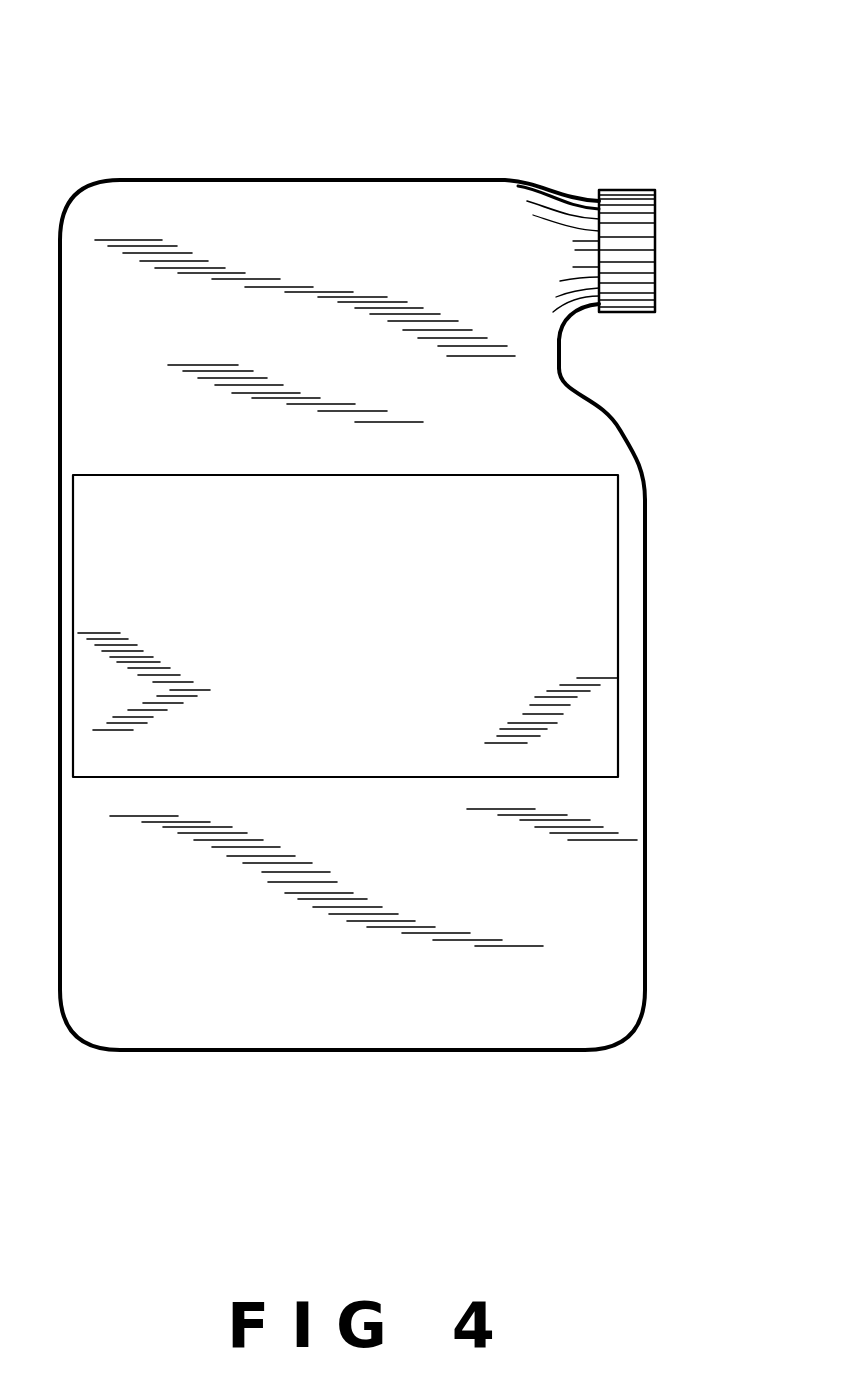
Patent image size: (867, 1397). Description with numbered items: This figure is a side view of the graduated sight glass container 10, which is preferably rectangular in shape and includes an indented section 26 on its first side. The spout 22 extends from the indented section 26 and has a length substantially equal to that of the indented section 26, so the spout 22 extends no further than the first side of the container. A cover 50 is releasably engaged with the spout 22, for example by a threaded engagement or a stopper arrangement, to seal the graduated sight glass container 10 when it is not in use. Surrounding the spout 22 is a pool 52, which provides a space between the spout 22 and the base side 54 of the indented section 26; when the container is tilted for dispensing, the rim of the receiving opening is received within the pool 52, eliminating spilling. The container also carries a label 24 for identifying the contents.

The graduated sight glass container 10 is at (220, 112).
The spout 22 is at (568, 198).
The label 24 is at (602, 741).
The indented section 26 is at (577, 376).
The cover 50 is at (638, 210).
The pool 52 is at (626, 341).
The base side 54 is at (598, 402).